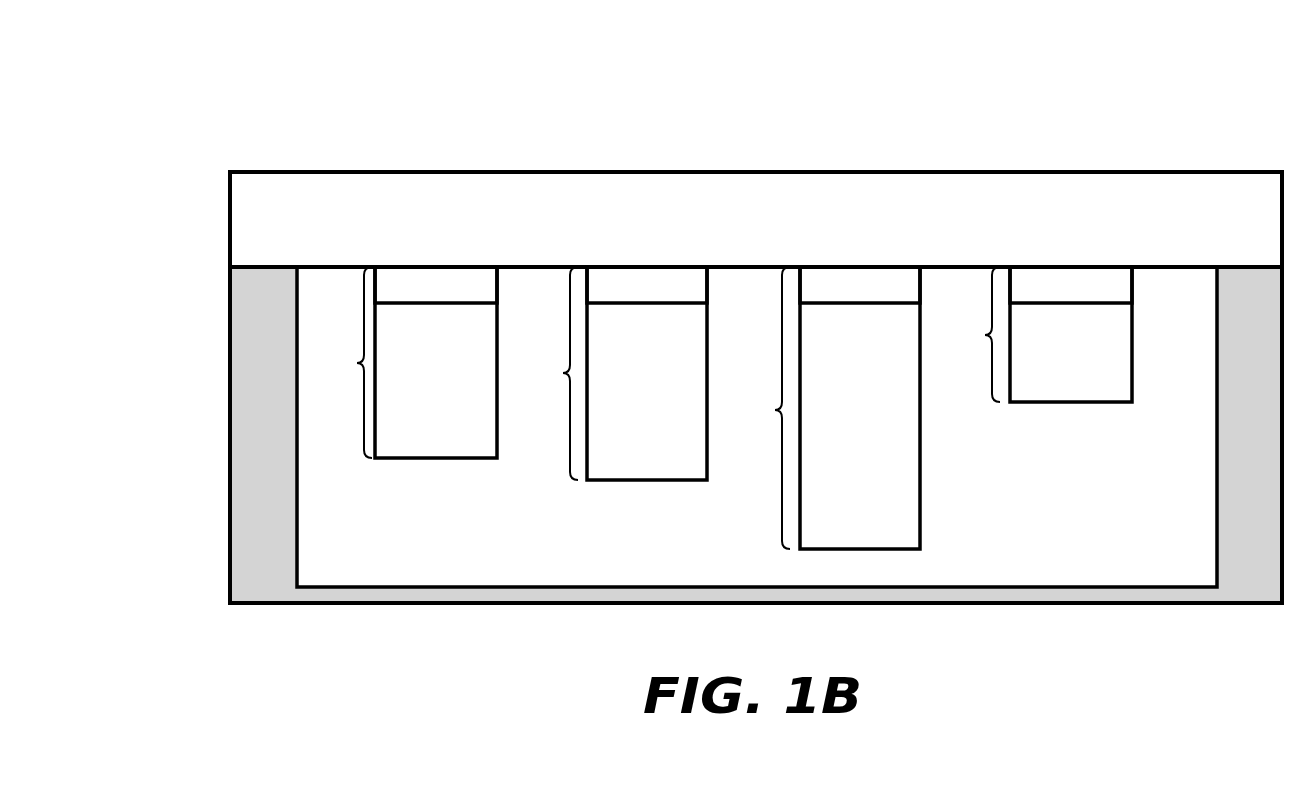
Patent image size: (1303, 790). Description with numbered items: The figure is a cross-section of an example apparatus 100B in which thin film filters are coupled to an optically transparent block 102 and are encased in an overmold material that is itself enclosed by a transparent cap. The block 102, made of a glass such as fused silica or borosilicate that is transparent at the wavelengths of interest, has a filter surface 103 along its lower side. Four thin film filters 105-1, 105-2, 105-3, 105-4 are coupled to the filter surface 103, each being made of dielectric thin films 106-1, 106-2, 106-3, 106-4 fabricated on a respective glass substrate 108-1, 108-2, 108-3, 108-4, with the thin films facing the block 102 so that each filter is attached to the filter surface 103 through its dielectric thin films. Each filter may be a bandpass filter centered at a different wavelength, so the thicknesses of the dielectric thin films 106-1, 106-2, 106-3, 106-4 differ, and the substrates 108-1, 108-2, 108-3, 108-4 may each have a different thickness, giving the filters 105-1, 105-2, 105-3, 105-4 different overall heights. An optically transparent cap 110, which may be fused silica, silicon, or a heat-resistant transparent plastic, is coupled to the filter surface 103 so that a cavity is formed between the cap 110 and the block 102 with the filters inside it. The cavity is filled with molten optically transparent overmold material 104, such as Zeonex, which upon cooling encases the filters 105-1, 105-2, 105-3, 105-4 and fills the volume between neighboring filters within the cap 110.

The example apparatus 100B is at (295, 64).
The optically transparent block 102 is at (230, 228).
The filter surface 103 is at (333, 267).
The optically transparent overmold material 104 is at (293, 405).
The thin film filter 105-1 is at (334, 362).
The thin film filter 105-2 is at (540, 373).
The thin film filter 105-3 is at (751, 408).
The thin film filter 105-4 is at (962, 334).
The dielectric thin films 106-1 is at (436, 285).
The dielectric thin films 106-2 is at (647, 285).
The dielectric thin films 106-3 is at (860, 285).
The dielectric thin films 106-4 is at (1071, 285).
The substrate 108-1 is at (436, 362).
The substrate 108-2 is at (647, 373).
The substrate 108-3 is at (860, 408).
The substrate 108-4 is at (1071, 334).
The optically transparent cap 110 is at (230, 458).